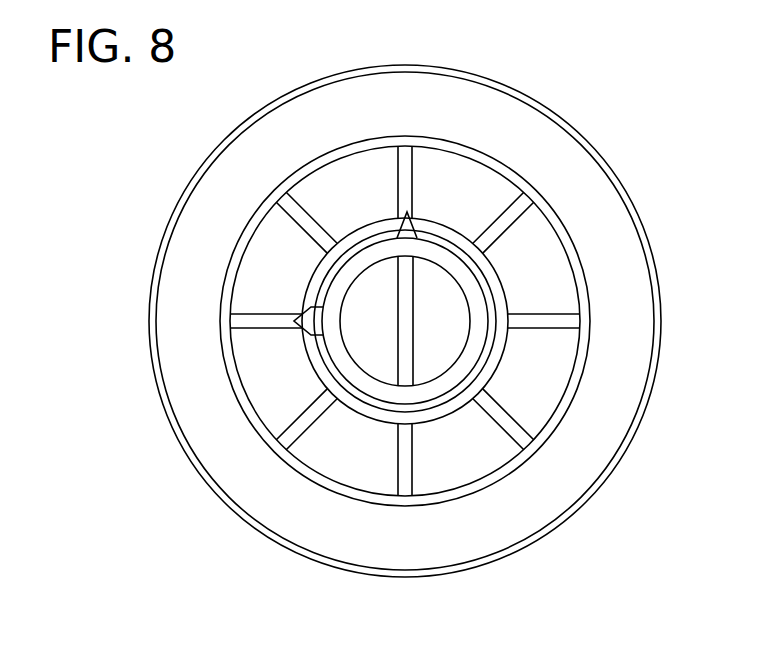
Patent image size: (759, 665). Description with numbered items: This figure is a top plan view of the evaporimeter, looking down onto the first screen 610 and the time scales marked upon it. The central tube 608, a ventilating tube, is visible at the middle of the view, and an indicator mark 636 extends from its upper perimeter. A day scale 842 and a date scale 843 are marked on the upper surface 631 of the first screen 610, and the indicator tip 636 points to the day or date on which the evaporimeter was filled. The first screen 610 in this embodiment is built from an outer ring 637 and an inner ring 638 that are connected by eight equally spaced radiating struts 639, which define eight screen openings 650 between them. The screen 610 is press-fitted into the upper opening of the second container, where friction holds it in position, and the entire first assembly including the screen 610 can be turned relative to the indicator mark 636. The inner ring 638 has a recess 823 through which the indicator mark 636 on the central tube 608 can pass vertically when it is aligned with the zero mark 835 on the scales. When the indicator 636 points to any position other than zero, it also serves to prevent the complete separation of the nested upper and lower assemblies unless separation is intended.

The first screen 610 is at (192, 188).
The upper surface 631 is at (653, 348).
The outer ring 637 is at (223, 278).
The zero mark 835 is at (166, 323).
The date scale 843 is at (607, 457).
The day scale 842 is at (437, 122).
The radiating struts 639 is at (302, 217).
The screen openings 650 is at (418, 477).
The inner ring 638 is at (350, 410).
The central tube 608 is at (473, 305).
The indicator mark 636 is at (410, 220).
The recess 823 is at (307, 307).